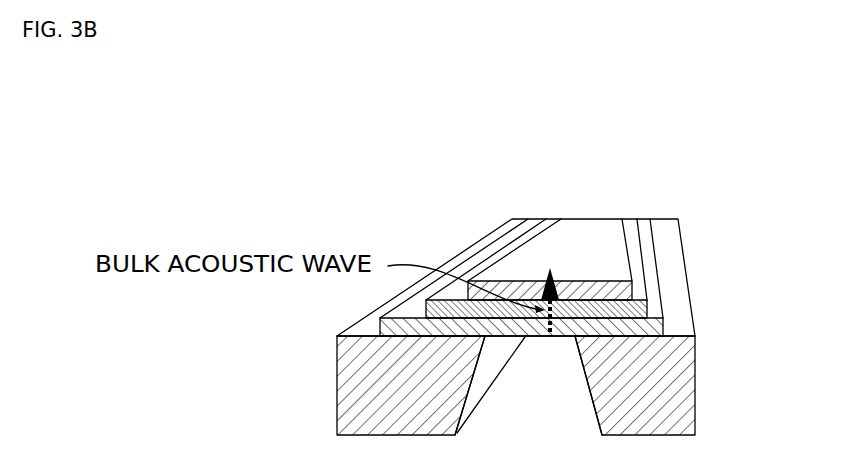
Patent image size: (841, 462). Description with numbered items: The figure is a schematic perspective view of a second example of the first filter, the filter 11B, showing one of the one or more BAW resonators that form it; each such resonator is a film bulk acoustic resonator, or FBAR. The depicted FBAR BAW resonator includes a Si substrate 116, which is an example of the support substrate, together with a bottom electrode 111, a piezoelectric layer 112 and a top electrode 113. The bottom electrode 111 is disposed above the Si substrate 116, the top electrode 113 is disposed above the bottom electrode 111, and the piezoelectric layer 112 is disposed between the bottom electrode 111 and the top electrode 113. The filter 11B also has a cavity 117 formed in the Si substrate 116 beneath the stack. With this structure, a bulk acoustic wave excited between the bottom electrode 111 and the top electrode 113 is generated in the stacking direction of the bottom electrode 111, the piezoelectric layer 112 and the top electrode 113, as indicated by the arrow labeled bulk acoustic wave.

The filter 11B is at (722, 207).
The bottom electrode 111 is at (651, 332).
The piezoelectric layer 112 is at (641, 312).
The top electrode 113 is at (630, 291).
The Si substrate 116 is at (668, 377).
The cavity 117 is at (578, 406).